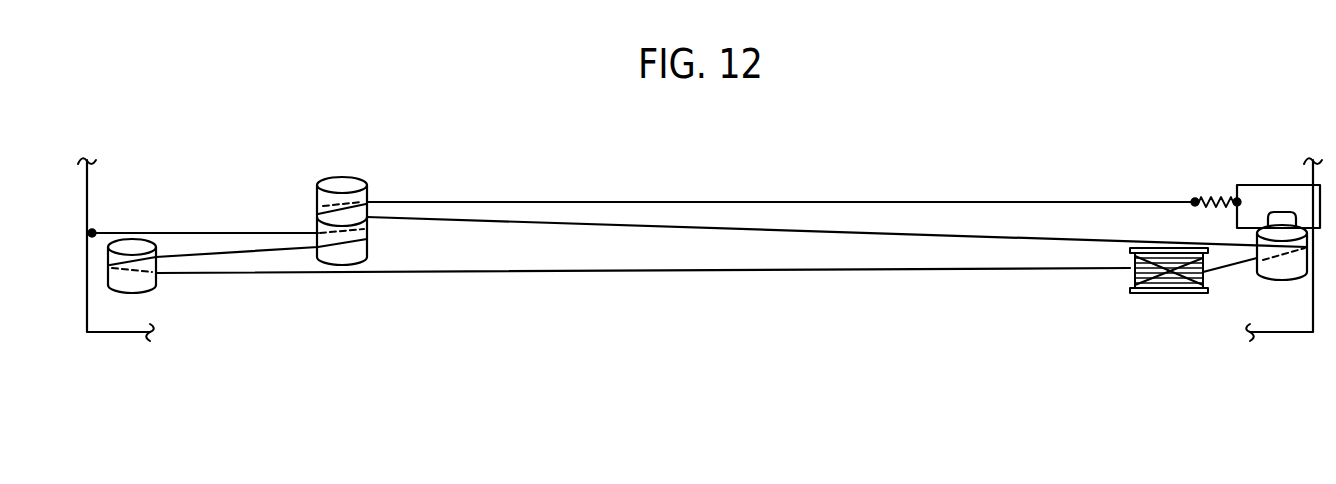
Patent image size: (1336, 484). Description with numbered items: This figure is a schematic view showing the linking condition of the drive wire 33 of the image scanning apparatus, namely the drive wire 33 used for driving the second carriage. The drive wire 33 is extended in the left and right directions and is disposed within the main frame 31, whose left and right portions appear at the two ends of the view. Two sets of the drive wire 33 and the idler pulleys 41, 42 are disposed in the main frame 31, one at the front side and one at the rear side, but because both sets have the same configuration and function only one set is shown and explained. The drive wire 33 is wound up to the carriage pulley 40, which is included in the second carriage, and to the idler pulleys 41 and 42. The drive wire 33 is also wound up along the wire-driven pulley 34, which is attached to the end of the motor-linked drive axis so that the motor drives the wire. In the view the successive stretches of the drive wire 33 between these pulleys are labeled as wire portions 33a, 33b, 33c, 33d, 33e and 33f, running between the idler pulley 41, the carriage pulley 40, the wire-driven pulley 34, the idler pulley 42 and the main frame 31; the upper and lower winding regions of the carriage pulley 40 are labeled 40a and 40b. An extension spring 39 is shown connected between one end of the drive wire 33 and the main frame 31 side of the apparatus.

The main frame 31 is at (90, 189).
The drive wire 33 is at (699, 227).
The wire portion 33a is at (790, 271).
The wire portion 33b is at (237, 256).
The wire portion 33c is at (193, 231).
The wire portion 33d is at (1223, 273).
The wire portion 33e is at (703, 230).
The wire portion 33f is at (563, 202).
The wire-driven pulley 34 is at (1157, 295).
The extension spring 39 is at (1215, 194).
The carriage pulley 40 is at (347, 213).
The upper pulley portion 40a is at (337, 178).
The lower pulley portion 40b is at (340, 258).
The idler pulley 41 is at (152, 294).
The idler pulley 42 is at (1273, 284).